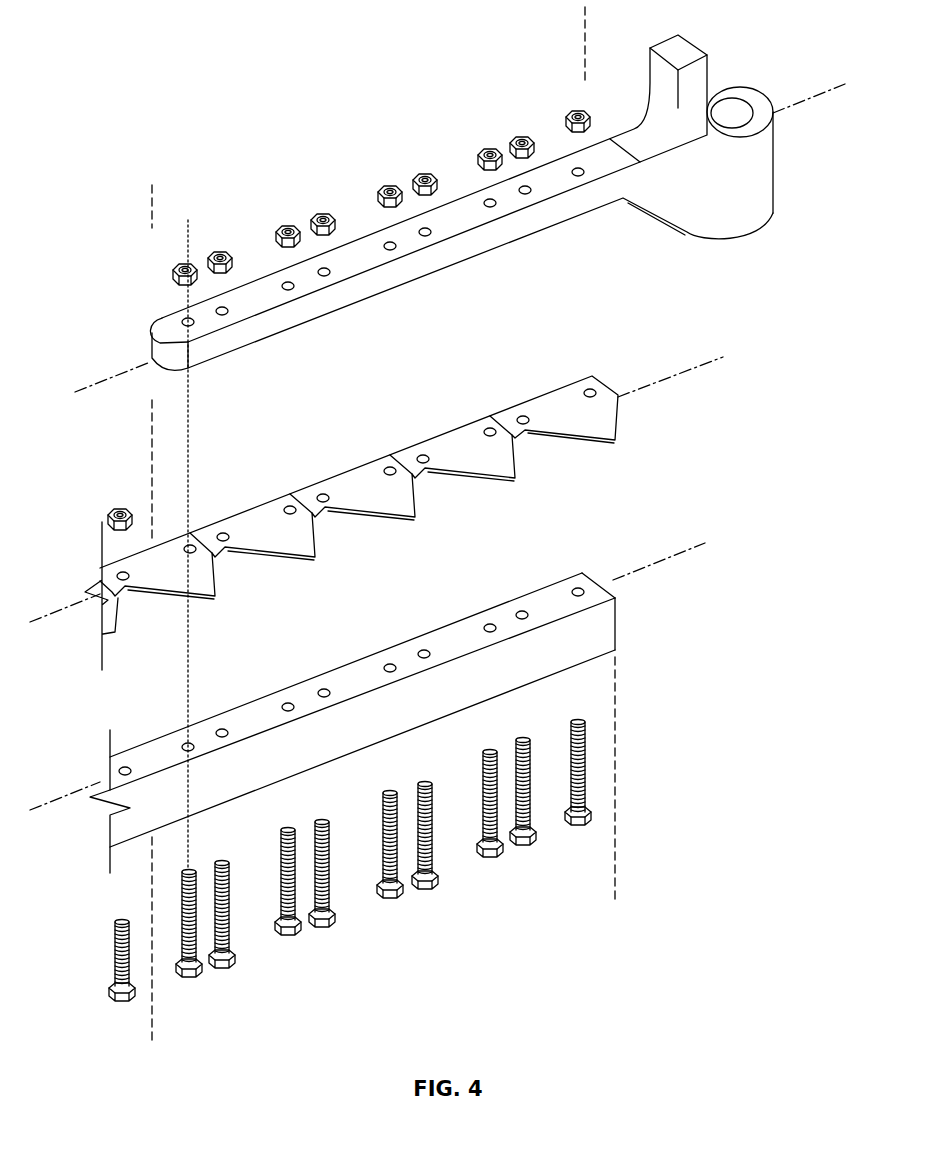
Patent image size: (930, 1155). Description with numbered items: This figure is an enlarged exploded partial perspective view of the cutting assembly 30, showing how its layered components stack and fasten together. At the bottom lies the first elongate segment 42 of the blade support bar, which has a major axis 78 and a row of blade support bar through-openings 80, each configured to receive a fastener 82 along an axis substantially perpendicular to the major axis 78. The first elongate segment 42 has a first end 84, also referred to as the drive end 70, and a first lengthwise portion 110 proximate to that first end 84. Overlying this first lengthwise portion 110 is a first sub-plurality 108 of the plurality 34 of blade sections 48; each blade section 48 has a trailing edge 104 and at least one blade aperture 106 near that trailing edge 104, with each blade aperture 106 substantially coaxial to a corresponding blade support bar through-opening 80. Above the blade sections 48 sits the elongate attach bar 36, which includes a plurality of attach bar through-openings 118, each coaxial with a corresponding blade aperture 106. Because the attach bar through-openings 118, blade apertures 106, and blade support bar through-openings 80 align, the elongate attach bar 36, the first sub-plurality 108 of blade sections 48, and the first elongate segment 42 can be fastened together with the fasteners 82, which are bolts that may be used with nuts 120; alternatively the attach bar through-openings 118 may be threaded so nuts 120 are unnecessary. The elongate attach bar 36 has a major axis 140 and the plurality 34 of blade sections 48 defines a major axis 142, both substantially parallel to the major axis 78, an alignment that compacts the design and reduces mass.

The cutting assembly 30 is at (203, 53).
The plurality of blade sections 34 is at (100, 197).
The elongate attach bar 36 is at (592, 162).
The first elongate segment 42 is at (488, 680).
The blade section 48 is at (600, 443).
The drive end 70 is at (618, 615).
The major axis 78 is at (667, 558).
The blade support bar through-opening 80 is at (430, 645).
The fastener 82 is at (578, 828).
The first end 84 is at (618, 630).
The trailing edge 104 is at (525, 402).
The blade aperture 106 is at (585, 387).
The first sub-plurality of blade sections 108 is at (150, 465).
The first lengthwise portion 110 is at (618, 895).
The attach bar through-opening 118 is at (574, 166).
The nut 120 is at (577, 108).
The major axis 140 is at (812, 92).
The major axis 142 is at (650, 383).